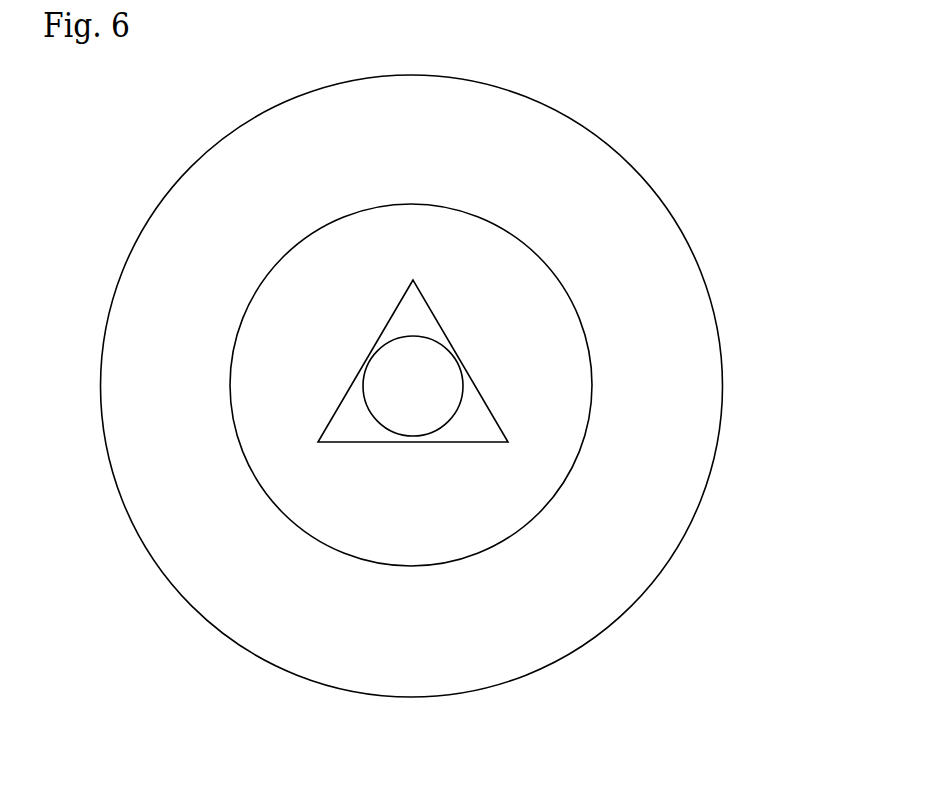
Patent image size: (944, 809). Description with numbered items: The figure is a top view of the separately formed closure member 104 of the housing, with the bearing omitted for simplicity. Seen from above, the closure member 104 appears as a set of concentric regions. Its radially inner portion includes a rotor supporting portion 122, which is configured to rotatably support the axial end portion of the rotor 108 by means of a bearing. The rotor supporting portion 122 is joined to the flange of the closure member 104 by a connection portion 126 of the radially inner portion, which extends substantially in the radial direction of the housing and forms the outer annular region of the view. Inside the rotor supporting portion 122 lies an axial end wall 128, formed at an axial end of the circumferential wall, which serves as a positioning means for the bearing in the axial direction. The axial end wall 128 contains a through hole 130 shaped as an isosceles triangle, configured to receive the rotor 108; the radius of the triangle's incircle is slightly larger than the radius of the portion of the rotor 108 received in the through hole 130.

The separately formed closure member 104 is at (722, 268).
The rotor supporting portion 122 is at (598, 363).
The axial end wall 128 is at (520, 290).
The connection portion 126 is at (623, 532).
The through hole 130 is at (496, 422).
The rotor 108 is at (463, 387).